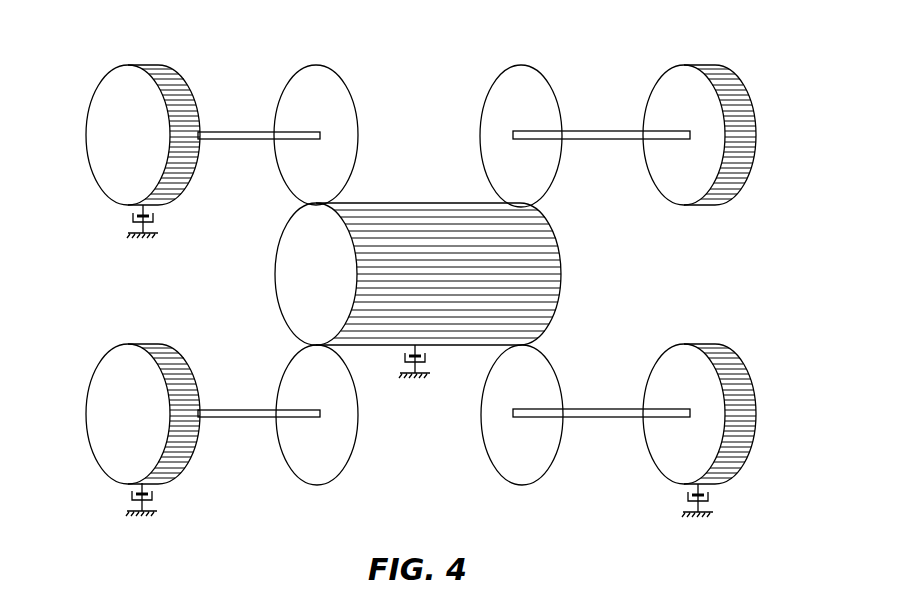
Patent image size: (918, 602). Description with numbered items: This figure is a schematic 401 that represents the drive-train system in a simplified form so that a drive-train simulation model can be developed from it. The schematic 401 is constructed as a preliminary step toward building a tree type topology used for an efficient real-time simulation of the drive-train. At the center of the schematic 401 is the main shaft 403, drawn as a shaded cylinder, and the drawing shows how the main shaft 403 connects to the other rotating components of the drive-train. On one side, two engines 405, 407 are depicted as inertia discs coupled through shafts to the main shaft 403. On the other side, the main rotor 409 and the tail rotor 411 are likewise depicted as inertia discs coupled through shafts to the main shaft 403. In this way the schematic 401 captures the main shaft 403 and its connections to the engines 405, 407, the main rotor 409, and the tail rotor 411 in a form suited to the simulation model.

The schematic 401 is at (417, 281).
The main shaft 403 is at (375, 274).
The engine 405 is at (108, 66).
The engine 407 is at (114, 394).
The main rotor 409 is at (663, 125).
The tail rotor 411 is at (662, 405).